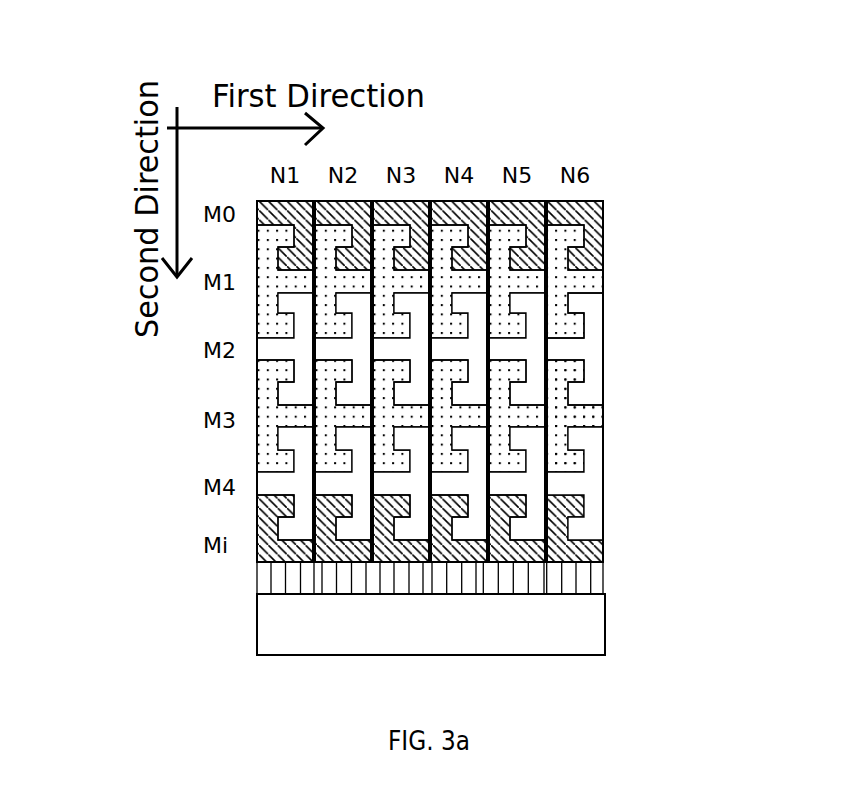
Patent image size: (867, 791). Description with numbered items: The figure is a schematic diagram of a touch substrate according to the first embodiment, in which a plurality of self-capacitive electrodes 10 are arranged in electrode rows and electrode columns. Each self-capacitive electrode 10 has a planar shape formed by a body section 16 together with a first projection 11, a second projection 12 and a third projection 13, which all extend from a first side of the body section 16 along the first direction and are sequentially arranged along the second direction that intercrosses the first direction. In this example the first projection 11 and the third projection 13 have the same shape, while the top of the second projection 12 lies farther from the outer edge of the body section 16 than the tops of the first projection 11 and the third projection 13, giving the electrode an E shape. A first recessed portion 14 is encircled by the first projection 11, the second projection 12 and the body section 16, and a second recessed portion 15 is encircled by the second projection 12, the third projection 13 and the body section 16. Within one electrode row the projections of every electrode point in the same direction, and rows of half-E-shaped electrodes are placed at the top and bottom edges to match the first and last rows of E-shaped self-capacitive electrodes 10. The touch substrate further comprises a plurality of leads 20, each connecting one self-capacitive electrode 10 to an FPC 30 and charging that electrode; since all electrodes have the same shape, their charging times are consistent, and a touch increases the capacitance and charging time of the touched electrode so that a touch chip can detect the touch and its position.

The self-capacitive electrode 10 is at (592, 278).
The first projection 11 is at (573, 370).
The second projection 12 is at (575, 421).
The third projection 13 is at (575, 465).
The first recessed portion 14 is at (568, 400).
The second recessed portion 15 is at (577, 442).
The body section 16 is at (555, 390).
The lead 20 is at (592, 568).
The FPC 30 is at (592, 627).